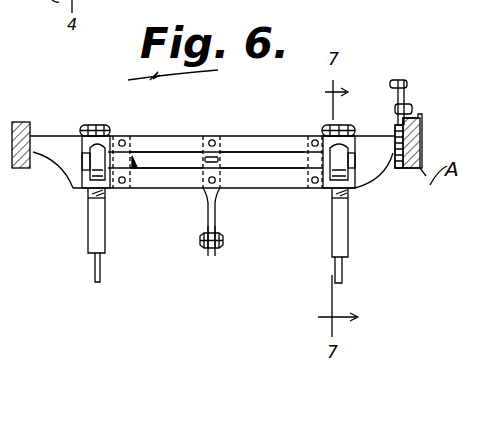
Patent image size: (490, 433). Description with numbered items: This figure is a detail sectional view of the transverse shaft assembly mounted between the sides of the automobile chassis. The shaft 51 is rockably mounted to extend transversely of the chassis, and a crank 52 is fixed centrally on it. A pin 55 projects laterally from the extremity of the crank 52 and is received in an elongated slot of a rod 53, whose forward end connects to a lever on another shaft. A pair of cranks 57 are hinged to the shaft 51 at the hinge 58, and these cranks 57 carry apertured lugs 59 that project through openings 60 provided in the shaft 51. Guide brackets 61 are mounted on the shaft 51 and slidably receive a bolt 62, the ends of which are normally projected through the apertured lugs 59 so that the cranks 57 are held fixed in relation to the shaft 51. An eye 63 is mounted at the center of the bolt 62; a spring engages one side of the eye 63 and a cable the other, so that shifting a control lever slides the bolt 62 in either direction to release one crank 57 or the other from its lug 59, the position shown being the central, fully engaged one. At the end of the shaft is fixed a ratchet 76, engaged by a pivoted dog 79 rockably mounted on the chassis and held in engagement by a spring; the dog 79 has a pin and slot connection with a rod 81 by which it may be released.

The shaft 51 is at (177, 144).
The crank 52 is at (215, 215).
The rod 53 is at (223, 247).
The pin 55 is at (222, 238).
The cranks 57 is at (102, 224).
The hinge 58 is at (80, 125).
The apertured lugs 59 is at (107, 143).
The openings 60 is at (110, 140).
The guide brackets 61 is at (131, 150).
The bolt 62 is at (255, 160).
The eye 63 is at (214, 157).
The ratchet 76 is at (395, 172).
The dog 79 is at (403, 92).
The rod 81 is at (393, 82).